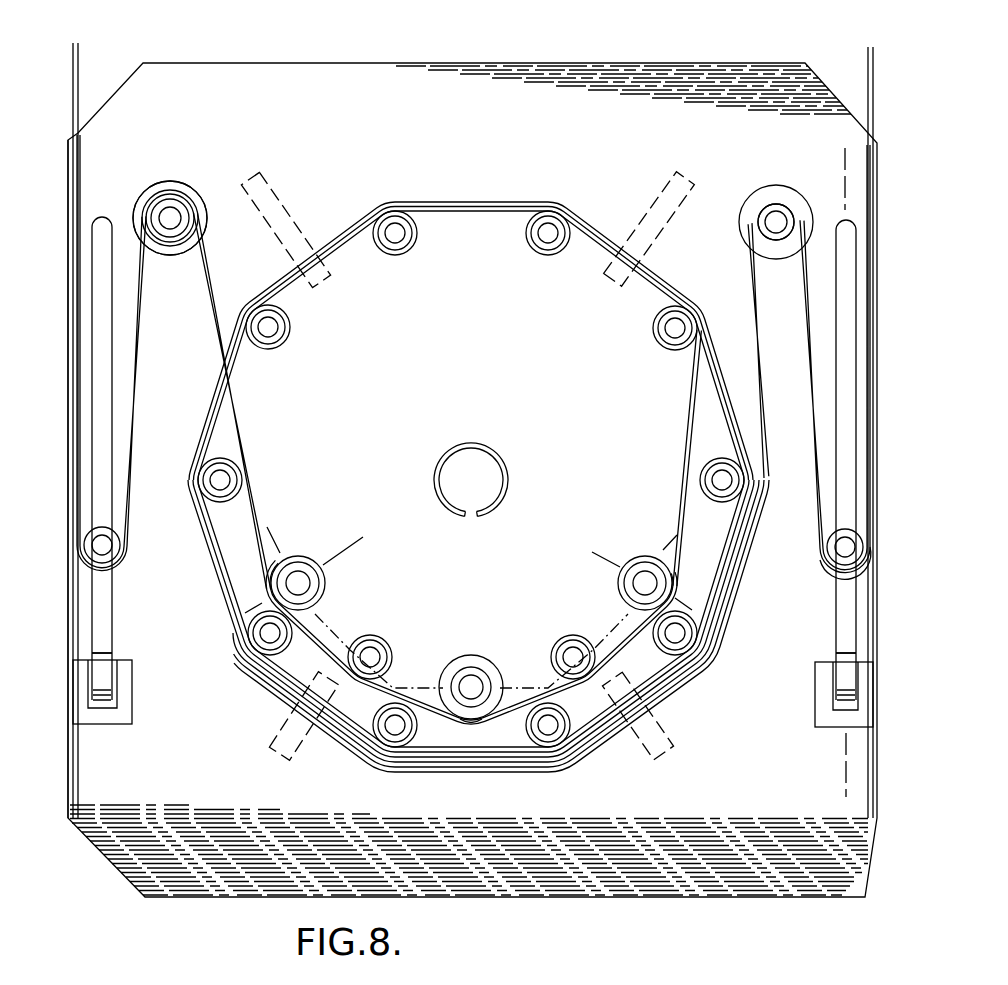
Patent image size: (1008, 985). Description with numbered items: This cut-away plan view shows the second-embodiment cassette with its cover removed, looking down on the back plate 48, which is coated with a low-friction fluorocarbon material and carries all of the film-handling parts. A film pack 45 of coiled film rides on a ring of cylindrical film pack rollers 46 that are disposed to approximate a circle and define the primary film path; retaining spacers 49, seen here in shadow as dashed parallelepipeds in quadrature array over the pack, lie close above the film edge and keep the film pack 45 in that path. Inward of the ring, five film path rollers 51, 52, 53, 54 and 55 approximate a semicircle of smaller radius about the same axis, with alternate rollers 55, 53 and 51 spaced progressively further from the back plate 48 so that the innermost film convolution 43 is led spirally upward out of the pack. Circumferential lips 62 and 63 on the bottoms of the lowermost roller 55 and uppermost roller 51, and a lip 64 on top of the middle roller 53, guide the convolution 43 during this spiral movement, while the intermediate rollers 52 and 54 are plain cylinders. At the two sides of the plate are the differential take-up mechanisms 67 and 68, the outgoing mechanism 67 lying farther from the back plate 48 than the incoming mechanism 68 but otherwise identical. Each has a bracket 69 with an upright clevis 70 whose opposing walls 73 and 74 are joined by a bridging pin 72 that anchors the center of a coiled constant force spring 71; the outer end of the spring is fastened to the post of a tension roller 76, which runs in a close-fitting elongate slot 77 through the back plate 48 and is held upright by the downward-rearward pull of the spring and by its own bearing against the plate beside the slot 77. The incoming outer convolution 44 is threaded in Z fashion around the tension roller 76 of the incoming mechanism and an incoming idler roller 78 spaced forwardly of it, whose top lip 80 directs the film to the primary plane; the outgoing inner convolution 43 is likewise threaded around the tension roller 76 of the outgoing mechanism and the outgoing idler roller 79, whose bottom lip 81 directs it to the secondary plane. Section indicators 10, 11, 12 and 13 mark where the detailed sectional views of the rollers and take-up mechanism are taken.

The section line 10- 10 is at (267, 527).
The section line 11- 11 is at (845, 155).
The section line 12- 12 is at (248, 612).
The section line 13- 13 is at (596, 561).
The innermost film convolution 43 is at (75, 80).
The outermost film convolution 44 is at (868, 72).
The film pack 45 is at (585, 222).
The film pack rollers 46 is at (525, 233).
The back plate 48 is at (555, 83).
The retaining spacers 49 is at (656, 192).
The film path roller 51 is at (325, 588).
The film path roller 52 is at (372, 636).
The film path roller 53 is at (480, 654).
The film path roller 54 is at (566, 640).
The film path roller 55 is at (627, 600).
The circumferential lip 62 is at (640, 560).
The circumferential lip 63 is at (322, 565).
The circumferential lip 64 is at (472, 719).
The outgoing differential take-up mechanism 67 is at (820, 574).
The incoming differential take-up mechanism 68 is at (74, 390).
The bracket 69 is at (820, 712).
The clevis 70 is at (108, 548).
The constant force spring 71 is at (838, 655).
The bridging pin 72 is at (113, 291).
The clevis wall 73 is at (838, 680).
The clevis wall 74 is at (853, 693).
The tension roller 76 is at (835, 540).
The elongate slot 77 is at (835, 352).
The incoming idler roller 78 is at (770, 184).
The outgoing idler roller 79 is at (177, 185).
The circumferential lip 80 is at (748, 230).
The circumferential lip 81 is at (135, 212).